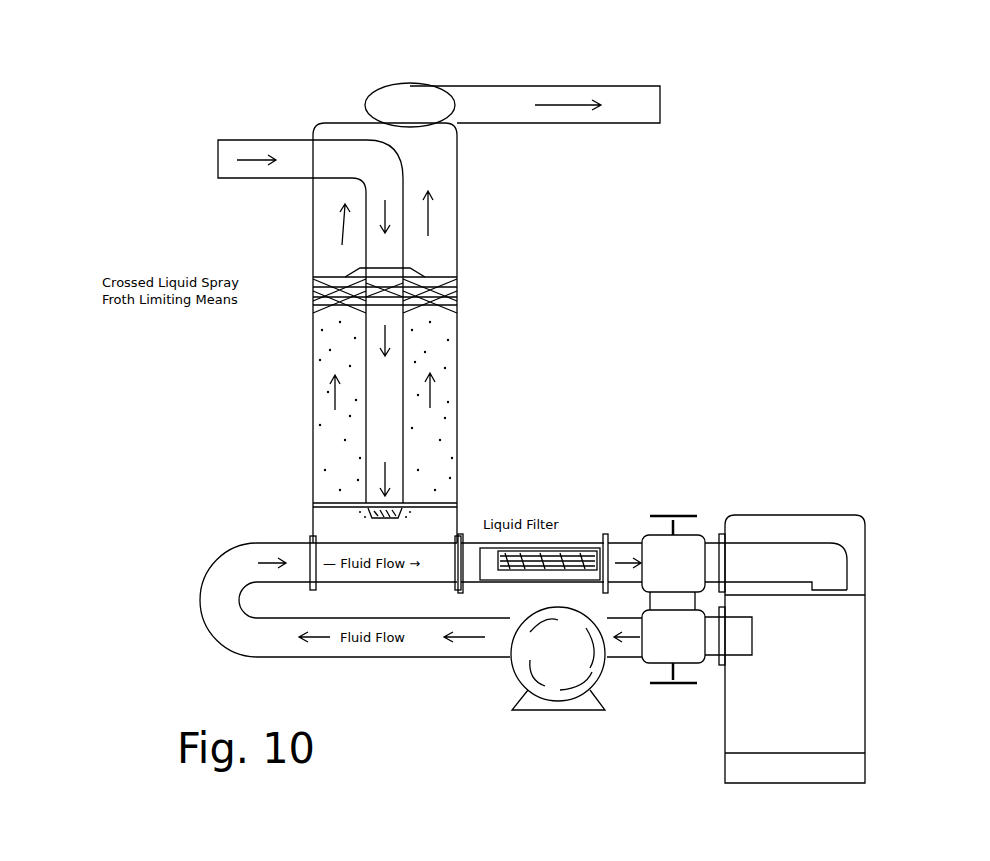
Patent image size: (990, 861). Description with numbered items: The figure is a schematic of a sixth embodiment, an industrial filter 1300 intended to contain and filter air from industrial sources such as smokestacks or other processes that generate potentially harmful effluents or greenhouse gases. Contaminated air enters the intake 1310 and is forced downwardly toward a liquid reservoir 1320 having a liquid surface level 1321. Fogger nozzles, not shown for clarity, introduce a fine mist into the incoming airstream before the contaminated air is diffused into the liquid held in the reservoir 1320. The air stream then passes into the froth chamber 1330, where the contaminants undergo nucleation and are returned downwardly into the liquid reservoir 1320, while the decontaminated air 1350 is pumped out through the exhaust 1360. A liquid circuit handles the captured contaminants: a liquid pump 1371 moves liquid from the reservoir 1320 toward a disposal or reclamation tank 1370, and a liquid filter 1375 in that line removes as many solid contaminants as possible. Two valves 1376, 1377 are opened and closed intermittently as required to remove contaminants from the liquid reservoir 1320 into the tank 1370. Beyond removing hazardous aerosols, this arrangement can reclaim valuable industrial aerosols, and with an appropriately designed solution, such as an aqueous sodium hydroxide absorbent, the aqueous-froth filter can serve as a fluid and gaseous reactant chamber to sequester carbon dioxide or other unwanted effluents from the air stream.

The industrial filter 1300 is at (252, 120).
The intake 1310 is at (246, 168).
The liquid reservoir 1320 is at (437, 523).
The liquid surface level 1321 is at (433, 503).
The froth chamber 1330 is at (438, 394).
The decontaminated air 1350 is at (443, 210).
The exhaust 1360 is at (646, 110).
The disposal or reclamation tank 1370 is at (835, 722).
The liquid pump 1371 is at (582, 672).
The liquid filter 1375 is at (600, 543).
The valve 1376 is at (705, 540).
The valve 1377 is at (690, 655).